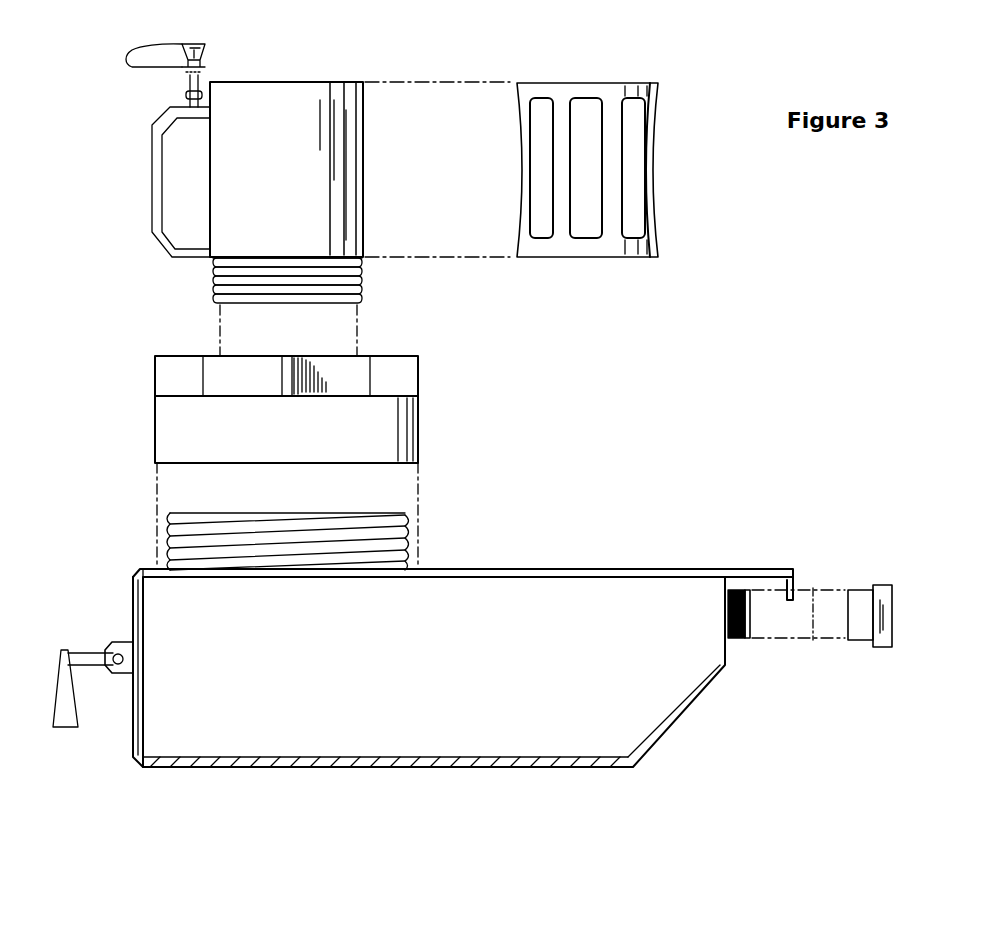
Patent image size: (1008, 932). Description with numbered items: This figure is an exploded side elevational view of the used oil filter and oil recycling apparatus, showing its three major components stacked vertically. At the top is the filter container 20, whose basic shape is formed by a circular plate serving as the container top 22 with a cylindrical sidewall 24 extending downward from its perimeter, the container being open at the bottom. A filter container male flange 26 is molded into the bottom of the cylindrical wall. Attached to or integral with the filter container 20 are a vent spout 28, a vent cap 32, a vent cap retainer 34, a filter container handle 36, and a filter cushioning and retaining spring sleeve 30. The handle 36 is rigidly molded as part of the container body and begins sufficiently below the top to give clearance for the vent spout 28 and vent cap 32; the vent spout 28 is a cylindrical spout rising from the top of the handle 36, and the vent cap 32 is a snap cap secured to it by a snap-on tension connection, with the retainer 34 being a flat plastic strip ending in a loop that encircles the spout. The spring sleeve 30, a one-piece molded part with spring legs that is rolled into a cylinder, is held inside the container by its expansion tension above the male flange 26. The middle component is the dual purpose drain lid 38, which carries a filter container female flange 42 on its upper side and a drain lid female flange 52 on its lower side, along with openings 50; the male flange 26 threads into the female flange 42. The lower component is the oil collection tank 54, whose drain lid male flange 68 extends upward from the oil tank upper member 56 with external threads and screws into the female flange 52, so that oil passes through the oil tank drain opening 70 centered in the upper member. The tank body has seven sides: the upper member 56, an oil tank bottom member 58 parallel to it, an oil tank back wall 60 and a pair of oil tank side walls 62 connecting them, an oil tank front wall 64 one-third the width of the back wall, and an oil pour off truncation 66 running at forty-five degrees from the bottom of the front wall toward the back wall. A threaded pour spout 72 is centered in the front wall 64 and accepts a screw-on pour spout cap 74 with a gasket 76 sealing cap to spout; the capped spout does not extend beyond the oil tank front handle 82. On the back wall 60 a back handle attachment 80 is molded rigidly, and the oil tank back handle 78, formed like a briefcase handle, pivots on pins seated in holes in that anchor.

The filter container 20 is at (282, 103).
The container top 22 is at (262, 80).
The cylindrical sidewall 24 is at (293, 174).
The filter container male flange 26 is at (208, 297).
The vent spout 28 is at (183, 101).
The filter cushioning and retaining spring sleeve 30 is at (652, 192).
The vent cap 32 is at (207, 54).
The vent cap retainer 34 is at (145, 52).
The filter container handle 36 is at (150, 205).
The drain lid 38 is at (150, 445).
The filter container female flange 42 is at (353, 370).
The vent openings 50 is at (287, 373).
The drain lid female flange 52 is at (400, 436).
The oil collection tank 54 is at (567, 605).
The oil tank upper member 56 is at (552, 567).
The oil tank bottom member 58 is at (358, 770).
The oil tank back wall 60 is at (128, 712).
The oil tank side walls 62 is at (508, 665).
The oil tank front wall 64 is at (730, 648).
The oil pour off truncation 66 is at (685, 720).
The drain lid male flange 68 is at (413, 548).
The oil tank drain opening 70 is at (250, 505).
The pour spout 72 is at (750, 630).
The pour spout cap 74 is at (870, 650).
The pour spout lid gasket 76 is at (815, 590).
The oil tank back handle 78 is at (52, 690).
The back handle attachment 80 is at (115, 640).
The oil tank front handle 82 is at (757, 568).